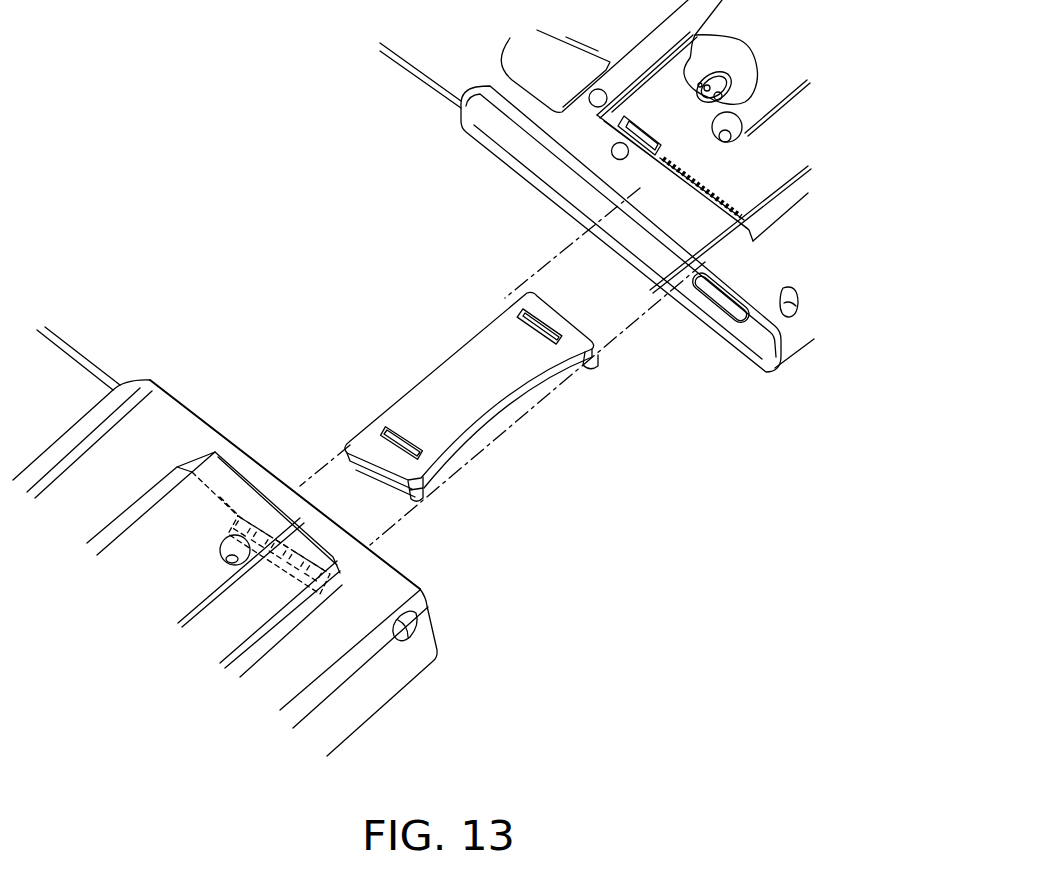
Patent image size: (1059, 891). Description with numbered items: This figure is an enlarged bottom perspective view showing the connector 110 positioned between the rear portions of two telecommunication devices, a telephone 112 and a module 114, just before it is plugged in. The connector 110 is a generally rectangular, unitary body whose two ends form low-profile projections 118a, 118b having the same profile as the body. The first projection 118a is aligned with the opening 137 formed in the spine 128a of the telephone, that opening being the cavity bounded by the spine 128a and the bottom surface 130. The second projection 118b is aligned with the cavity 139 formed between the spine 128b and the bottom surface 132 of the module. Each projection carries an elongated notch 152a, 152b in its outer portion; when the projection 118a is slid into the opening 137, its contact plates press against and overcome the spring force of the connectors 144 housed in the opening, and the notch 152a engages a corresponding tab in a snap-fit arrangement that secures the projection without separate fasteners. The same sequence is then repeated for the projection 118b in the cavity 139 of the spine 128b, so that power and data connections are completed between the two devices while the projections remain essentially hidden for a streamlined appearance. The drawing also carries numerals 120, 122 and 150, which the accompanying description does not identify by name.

The connector 110 is at (508, 438).
The first connector assembly (upper) 112 is at (374, 77).
The second connector assembly (lower housing) 114 is at (97, 308).
The projection 118a is at (587, 363).
The second projection 118b is at (425, 500).
The plug body 120 is at (483, 120).
The housing front face 122 is at (398, 678).
The spine 128a is at (818, 158).
The spine 128b is at (215, 628).
The bottom surface 130 is at (785, 275).
The bottom surface 132 is at (318, 675).
The opening 137 is at (656, 172).
The cavity 139 is at (335, 583).
The connectors 144 is at (690, 173).
The mounting post 150 is at (738, 125).
The elongated notch 152a is at (517, 311).
The elongated notch 152b is at (385, 431).